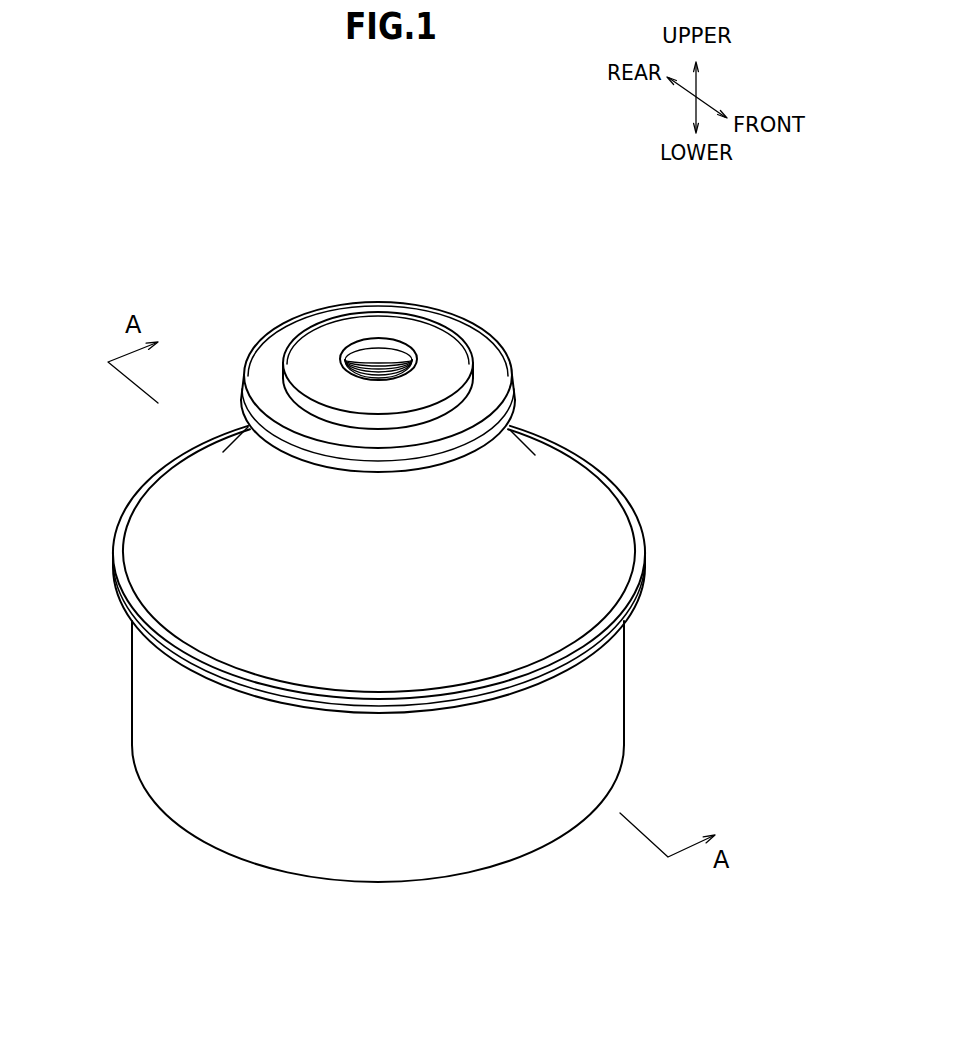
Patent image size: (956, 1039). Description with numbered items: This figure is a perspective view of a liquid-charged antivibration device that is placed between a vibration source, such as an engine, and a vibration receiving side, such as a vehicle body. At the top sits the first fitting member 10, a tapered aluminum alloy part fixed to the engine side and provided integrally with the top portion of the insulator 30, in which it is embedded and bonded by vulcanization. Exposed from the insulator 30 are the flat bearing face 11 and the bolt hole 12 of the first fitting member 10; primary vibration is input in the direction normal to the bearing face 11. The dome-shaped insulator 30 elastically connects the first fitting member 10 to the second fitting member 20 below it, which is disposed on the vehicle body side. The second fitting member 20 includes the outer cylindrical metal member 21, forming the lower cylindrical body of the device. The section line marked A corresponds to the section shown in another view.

The first fitting member 10 is at (441, 342).
The bearing face 11 is at (408, 323).
The bolt hole 12 is at (378, 352).
The second fitting member 20 is at (629, 687).
The outer cylindrical metal member 21 is at (643, 533).
The insulator 30 is at (557, 482).